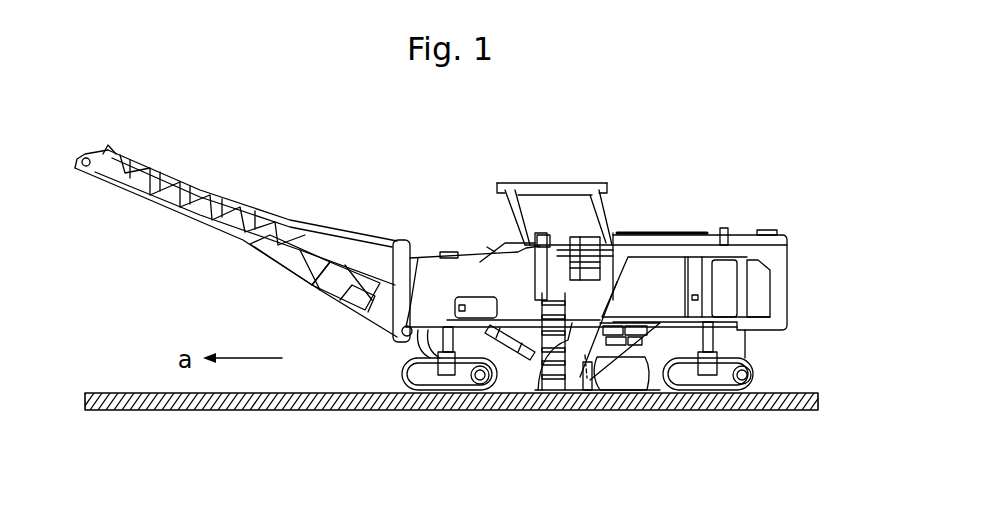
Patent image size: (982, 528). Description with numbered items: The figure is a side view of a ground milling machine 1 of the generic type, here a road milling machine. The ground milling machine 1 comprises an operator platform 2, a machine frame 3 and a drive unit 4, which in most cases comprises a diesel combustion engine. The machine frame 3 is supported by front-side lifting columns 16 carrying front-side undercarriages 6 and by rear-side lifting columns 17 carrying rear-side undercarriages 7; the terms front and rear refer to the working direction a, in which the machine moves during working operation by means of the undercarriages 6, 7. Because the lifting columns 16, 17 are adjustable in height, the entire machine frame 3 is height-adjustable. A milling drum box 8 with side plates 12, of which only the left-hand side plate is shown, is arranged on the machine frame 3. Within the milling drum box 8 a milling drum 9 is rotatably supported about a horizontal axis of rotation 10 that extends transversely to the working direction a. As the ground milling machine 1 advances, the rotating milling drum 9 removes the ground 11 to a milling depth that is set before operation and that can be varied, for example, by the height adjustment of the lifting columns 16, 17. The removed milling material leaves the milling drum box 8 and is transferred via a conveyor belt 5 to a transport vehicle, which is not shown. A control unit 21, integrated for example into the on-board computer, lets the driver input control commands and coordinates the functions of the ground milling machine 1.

The ground milling machine 1 is at (621, 146).
The operator platform 2 is at (563, 217).
The machine frame 3 is at (473, 277).
The drive unit 4 is at (667, 272).
The conveyor belt 5 is at (282, 228).
The front-side undercarriage 6 is at (478, 392).
The rear-side undercarriage 7 is at (712, 337).
The milling drum box 8 is at (642, 386).
The milling drum 9 is at (610, 388).
The horizontal axis of rotation 10 is at (589, 375).
The ground 11 is at (303, 395).
The side plate 12 is at (537, 380).
The front-side lifting column 16 is at (437, 365).
The rear-side lifting column 17 is at (757, 380).
The control unit 21 is at (523, 200).